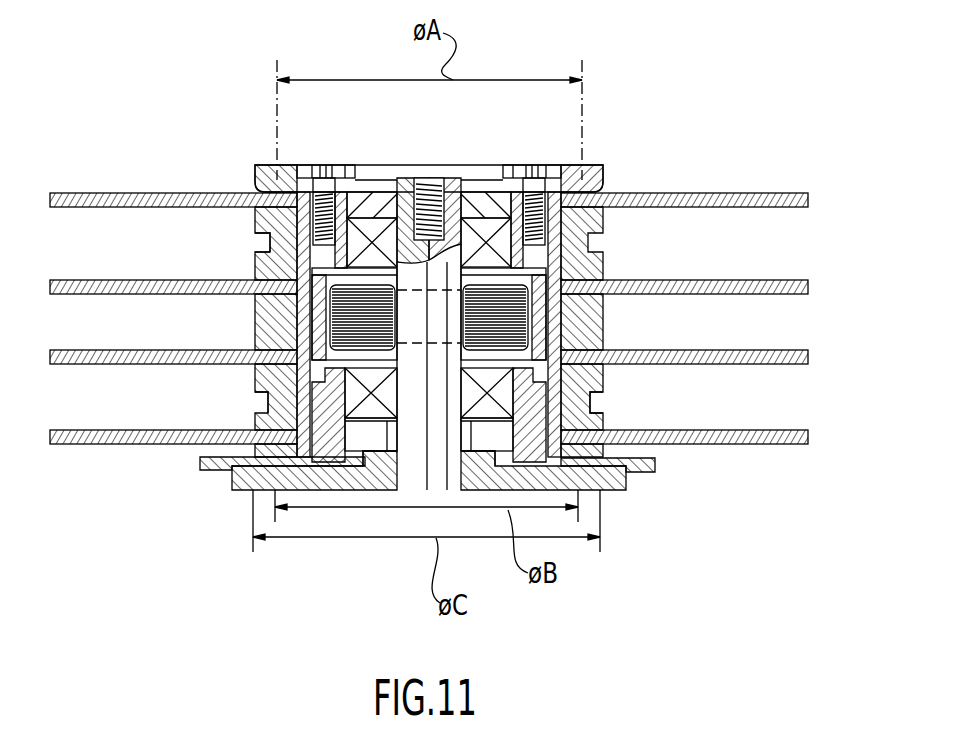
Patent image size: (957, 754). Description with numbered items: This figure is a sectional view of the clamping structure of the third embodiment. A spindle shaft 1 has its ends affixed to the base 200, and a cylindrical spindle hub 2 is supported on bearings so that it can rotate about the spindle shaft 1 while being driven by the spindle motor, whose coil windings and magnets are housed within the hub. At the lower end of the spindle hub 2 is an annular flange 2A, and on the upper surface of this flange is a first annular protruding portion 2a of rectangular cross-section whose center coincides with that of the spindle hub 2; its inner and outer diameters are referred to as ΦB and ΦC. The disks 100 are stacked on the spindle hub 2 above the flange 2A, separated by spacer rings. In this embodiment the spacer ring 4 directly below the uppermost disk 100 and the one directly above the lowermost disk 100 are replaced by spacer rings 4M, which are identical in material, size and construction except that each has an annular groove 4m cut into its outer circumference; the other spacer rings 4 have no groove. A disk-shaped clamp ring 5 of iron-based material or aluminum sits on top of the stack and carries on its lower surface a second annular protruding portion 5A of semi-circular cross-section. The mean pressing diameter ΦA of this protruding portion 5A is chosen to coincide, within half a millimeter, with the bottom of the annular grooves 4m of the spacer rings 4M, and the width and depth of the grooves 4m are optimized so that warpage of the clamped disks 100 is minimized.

The spindle shaft 1 is at (405, 176).
The spindle hub 2 is at (322, 470).
The annular flange 2A is at (337, 455).
The first annular protruding portion 2a is at (225, 456).
The spacer ring 4 is at (603, 318).
The grooved spacer ring 4M is at (257, 233).
The annular groove 4m is at (257, 253).
The clamp ring 5 is at (588, 167).
The second annular protruding portion 5A is at (605, 190).
The disk 100 is at (750, 193).
The base 200 is at (624, 482).